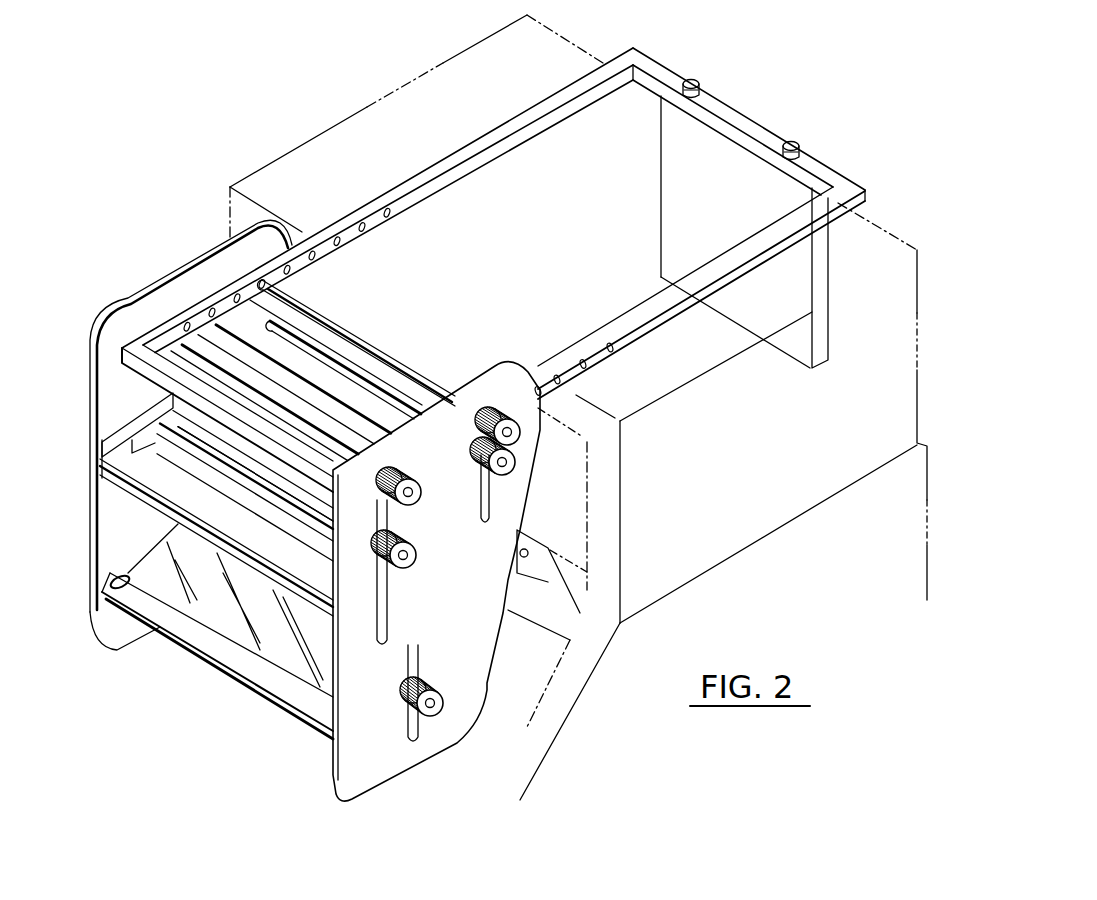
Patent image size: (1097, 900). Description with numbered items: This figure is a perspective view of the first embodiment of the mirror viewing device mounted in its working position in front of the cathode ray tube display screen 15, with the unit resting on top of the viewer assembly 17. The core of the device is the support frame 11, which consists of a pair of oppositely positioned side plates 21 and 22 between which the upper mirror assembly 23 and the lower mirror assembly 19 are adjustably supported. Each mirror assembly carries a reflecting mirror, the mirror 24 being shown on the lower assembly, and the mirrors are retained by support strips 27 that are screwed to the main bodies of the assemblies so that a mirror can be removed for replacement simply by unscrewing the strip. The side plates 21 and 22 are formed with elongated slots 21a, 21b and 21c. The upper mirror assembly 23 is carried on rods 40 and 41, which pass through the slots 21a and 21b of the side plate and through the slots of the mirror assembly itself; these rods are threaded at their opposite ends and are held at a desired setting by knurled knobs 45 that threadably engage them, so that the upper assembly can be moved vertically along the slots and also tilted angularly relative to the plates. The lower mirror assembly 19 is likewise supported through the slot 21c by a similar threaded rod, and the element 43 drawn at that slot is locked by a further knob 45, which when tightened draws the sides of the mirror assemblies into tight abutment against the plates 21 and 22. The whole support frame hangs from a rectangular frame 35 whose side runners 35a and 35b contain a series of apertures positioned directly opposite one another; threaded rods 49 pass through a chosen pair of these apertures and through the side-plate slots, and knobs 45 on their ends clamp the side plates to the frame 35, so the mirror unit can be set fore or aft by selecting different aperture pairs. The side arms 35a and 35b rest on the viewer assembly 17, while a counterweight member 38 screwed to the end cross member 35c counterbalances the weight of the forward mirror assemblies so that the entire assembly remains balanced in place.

The support frame 11 is at (187, 247).
The cathode ray tube display screen 15 is at (570, 500).
The viewer assembly 17 is at (340, 117).
The lower mirror assembly 19 is at (260, 703).
The side plate 21 is at (476, 694).
The elongated slot 21a is at (367, 632).
The elongated slot 21b is at (477, 500).
The elongated slot 21c is at (423, 630).
The side plate 22 is at (145, 302).
The upper mirror assembly 23 is at (128, 416).
The reflecting mirror 24 is at (160, 565).
The support strip 27 is at (197, 632).
The rectangular frame 35 is at (422, 173).
The side runner 35a is at (496, 131).
The side runner 35b is at (573, 347).
The end cross member 35c is at (740, 106).
The counterweight member 38 is at (832, 292).
The rod 40 is at (697, 80).
The rod 41 is at (325, 368).
The drive pulley 43 is at (433, 707).
The knurled knob 45 is at (477, 447).
The rod 49 is at (292, 397).